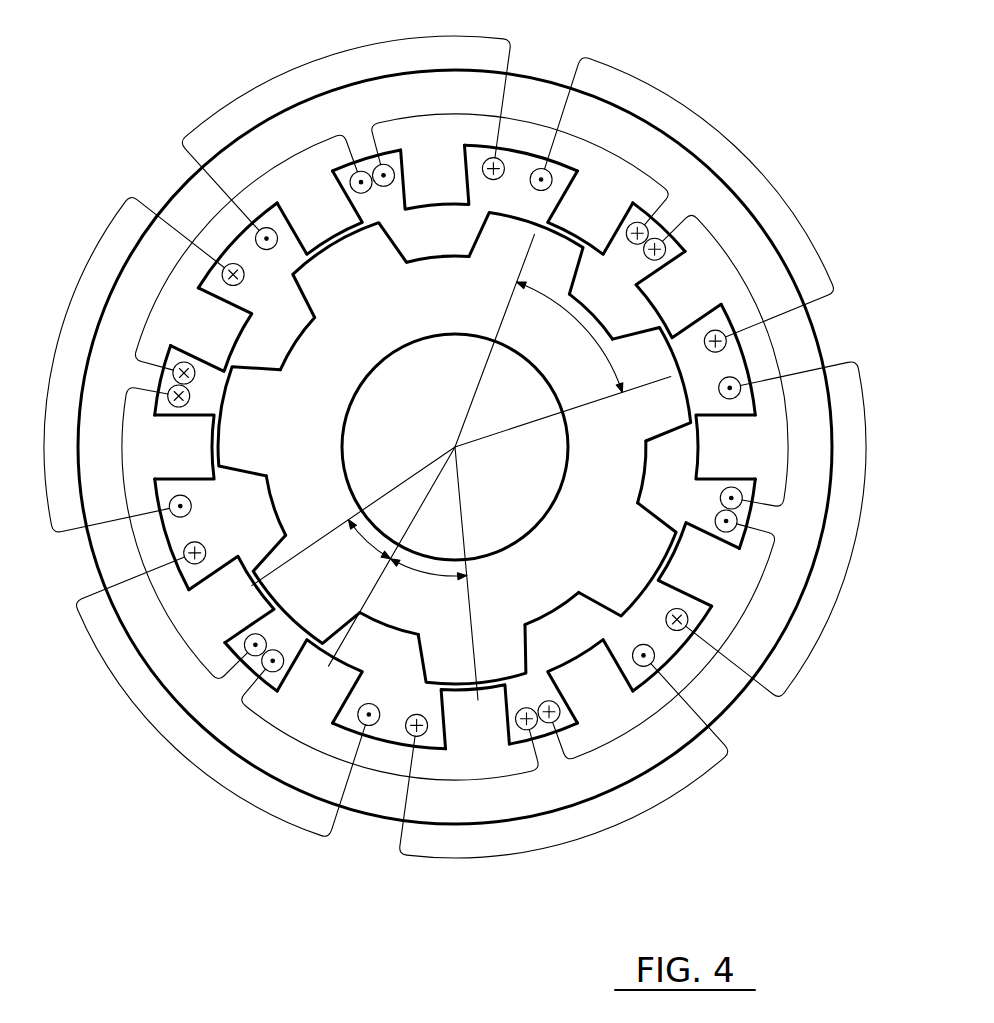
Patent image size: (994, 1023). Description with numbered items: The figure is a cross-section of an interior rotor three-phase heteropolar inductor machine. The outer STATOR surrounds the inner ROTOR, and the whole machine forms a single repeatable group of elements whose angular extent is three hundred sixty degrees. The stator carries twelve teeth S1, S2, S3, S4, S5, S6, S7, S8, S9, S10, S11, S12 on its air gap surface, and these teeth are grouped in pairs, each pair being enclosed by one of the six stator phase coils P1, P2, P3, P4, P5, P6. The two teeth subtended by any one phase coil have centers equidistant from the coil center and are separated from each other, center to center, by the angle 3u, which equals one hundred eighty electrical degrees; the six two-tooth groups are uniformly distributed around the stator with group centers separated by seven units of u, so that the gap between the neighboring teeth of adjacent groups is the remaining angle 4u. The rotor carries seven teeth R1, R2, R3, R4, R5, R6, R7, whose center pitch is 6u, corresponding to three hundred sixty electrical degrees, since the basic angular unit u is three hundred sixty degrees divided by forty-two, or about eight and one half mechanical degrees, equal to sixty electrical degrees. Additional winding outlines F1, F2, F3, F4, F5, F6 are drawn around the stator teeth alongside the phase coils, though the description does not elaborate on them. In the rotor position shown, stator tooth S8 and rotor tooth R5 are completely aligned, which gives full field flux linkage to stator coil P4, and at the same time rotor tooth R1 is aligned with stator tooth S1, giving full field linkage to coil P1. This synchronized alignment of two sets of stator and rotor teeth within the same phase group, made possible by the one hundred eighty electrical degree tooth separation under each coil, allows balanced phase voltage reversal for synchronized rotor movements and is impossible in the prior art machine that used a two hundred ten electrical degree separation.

The stator STATOR is at (743, 688).
The rotor ROTOR is at (375, 367).
The stator tooth S1 is at (319, 212).
The stator tooth S2 is at (435, 177).
The stator tooth S3 is at (590, 212).
The stator tooth S4 is at (678, 294).
The stator tooth S5 is at (725, 447).
The stator tooth S6 is at (698, 564).
The stator tooth S7 is at (590, 681).
The stator tooth S8 is at (475, 717).
The stator tooth S9 is at (319, 681).
The stator tooth S10 is at (231, 599).
The stator tooth S11 is at (183, 447).
The stator tooth S12 is at (211, 329).
The rotor tooth R1 is at (347, 266).
The rotor tooth R2 is at (528, 250).
The rotor tooth R3 is at (655, 381).
The rotor tooth R4 is at (631, 562).
The rotor tooth R5 is at (474, 656).
The rotor tooth R6 is at (303, 592).
The rotor tooth R7 is at (246, 419).
The stator phase coil P1 is at (352, 47).
The stator phase coil P2 is at (709, 122).
The stator phase coil P3 is at (813, 649).
The stator phase coil P4 is at (560, 846).
The stator phase coil P5 is at (224, 788).
The stator phase coil P6 is at (86, 266).
The field winding 1 F1 is at (210, 220).
The field winding 2 F2 is at (529, 121).
The field winding 3 F3 is at (773, 348).
The field winding 4 F4 is at (711, 657).
The field winding 5 F5 is at (380, 772).
The field winding 6 F6 is at (142, 562).
The rotor tooth center pitch 6u is at (563, 340).
The stator tooth center separation within a phase group 3u is at (353, 556).
The stator pole spacing angle 4u is at (435, 573).